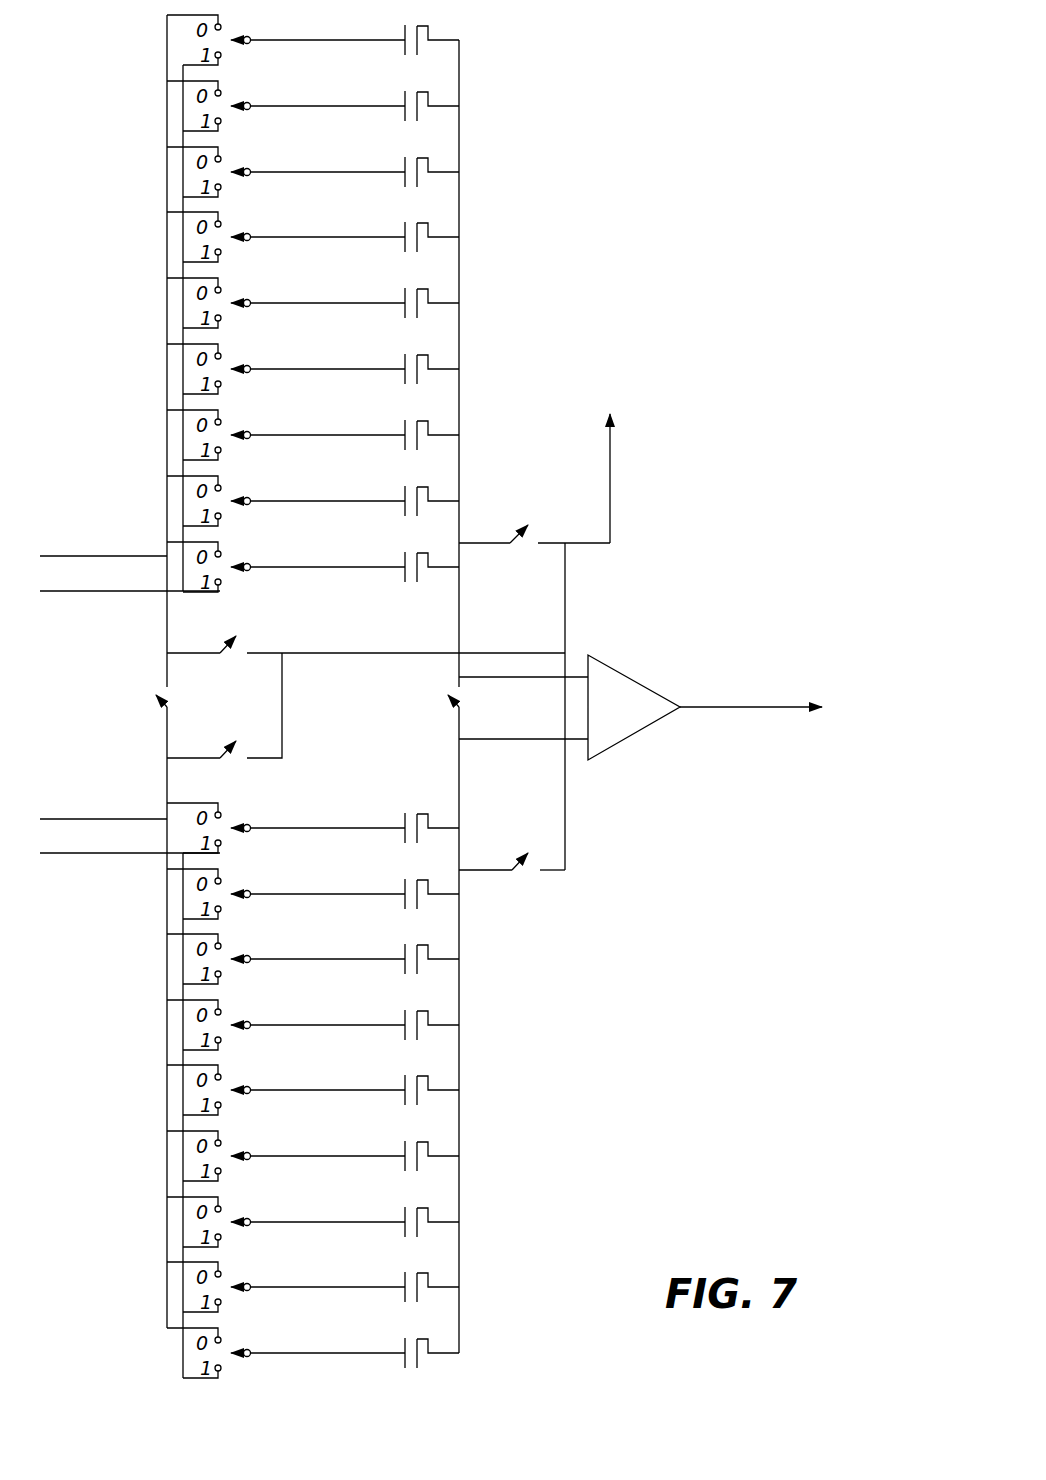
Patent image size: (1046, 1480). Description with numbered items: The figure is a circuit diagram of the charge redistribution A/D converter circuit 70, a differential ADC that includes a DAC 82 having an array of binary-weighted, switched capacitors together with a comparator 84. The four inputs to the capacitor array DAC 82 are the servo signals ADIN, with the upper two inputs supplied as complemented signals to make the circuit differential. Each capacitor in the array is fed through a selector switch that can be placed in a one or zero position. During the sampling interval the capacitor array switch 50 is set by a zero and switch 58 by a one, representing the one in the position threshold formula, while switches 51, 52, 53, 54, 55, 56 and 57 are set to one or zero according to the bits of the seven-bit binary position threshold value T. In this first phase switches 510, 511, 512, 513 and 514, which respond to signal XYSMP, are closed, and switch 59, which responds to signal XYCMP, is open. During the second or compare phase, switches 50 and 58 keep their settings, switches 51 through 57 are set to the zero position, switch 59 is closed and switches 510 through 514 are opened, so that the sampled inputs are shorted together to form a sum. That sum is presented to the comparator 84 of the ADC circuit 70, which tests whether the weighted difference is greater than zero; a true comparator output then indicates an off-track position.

The capacitor array switch S0 50 is at (247, 36).
The capacitor array switch S1 51 is at (247, 102).
The capacitor array switch S2 52 is at (247, 168).
The capacitor array switch S3 53 is at (247, 233).
The capacitor array switch S4 54 is at (247, 299).
The capacitor array switch S5 55 is at (247, 365).
The capacitor array switch S6 56 is at (247, 431).
The capacitor array switch S7 57 is at (247, 497).
The capacitor array switch S8 58 is at (247, 563).
The switch S9 59 is at (163, 705).
The switch S10 510 is at (232, 643).
The switch S11 511 is at (232, 748).
The switch S12 512 is at (522, 533).
The switch S13 513 is at (522, 858).
The switch S14 514 is at (454, 704).
The DAC 82 is at (461, 1130).
The comparator 84 is at (628, 672).
The charge redistribution A/D converter circuit 70 is at (712, 1062).